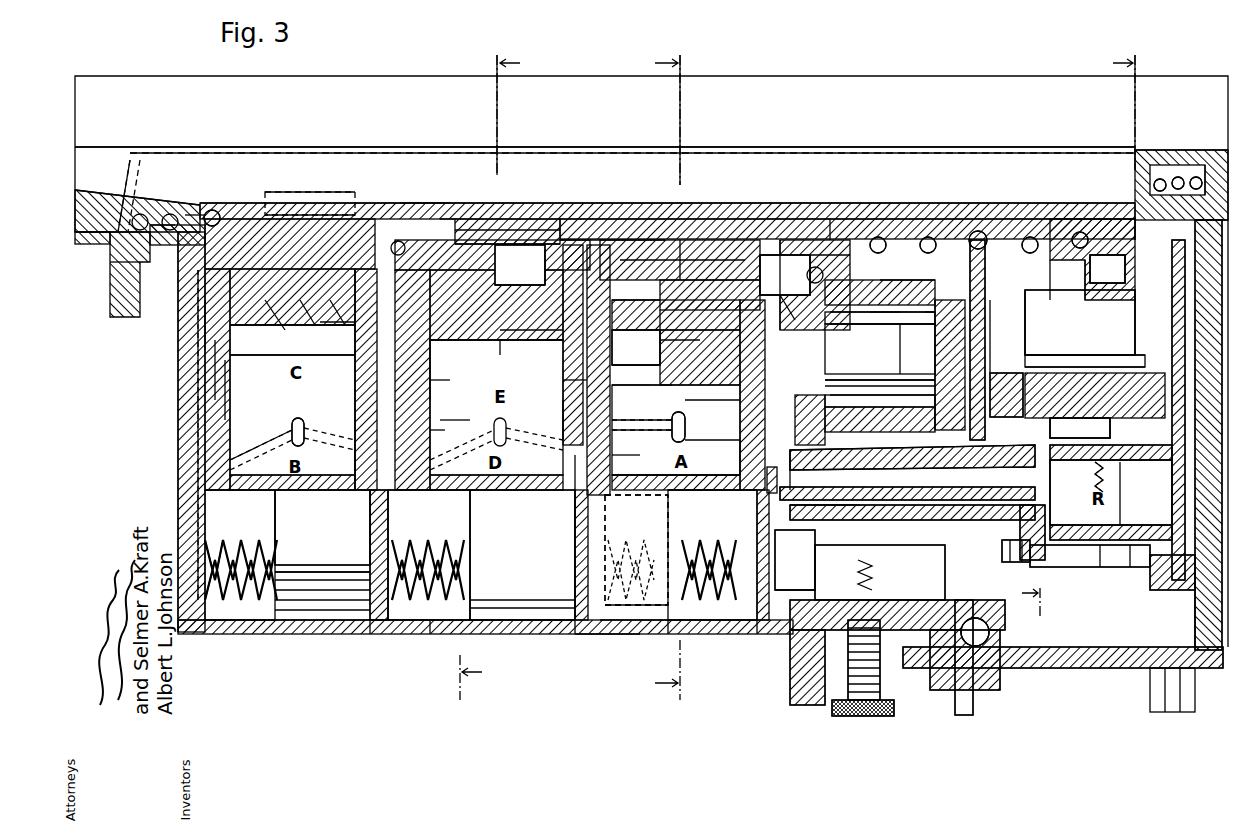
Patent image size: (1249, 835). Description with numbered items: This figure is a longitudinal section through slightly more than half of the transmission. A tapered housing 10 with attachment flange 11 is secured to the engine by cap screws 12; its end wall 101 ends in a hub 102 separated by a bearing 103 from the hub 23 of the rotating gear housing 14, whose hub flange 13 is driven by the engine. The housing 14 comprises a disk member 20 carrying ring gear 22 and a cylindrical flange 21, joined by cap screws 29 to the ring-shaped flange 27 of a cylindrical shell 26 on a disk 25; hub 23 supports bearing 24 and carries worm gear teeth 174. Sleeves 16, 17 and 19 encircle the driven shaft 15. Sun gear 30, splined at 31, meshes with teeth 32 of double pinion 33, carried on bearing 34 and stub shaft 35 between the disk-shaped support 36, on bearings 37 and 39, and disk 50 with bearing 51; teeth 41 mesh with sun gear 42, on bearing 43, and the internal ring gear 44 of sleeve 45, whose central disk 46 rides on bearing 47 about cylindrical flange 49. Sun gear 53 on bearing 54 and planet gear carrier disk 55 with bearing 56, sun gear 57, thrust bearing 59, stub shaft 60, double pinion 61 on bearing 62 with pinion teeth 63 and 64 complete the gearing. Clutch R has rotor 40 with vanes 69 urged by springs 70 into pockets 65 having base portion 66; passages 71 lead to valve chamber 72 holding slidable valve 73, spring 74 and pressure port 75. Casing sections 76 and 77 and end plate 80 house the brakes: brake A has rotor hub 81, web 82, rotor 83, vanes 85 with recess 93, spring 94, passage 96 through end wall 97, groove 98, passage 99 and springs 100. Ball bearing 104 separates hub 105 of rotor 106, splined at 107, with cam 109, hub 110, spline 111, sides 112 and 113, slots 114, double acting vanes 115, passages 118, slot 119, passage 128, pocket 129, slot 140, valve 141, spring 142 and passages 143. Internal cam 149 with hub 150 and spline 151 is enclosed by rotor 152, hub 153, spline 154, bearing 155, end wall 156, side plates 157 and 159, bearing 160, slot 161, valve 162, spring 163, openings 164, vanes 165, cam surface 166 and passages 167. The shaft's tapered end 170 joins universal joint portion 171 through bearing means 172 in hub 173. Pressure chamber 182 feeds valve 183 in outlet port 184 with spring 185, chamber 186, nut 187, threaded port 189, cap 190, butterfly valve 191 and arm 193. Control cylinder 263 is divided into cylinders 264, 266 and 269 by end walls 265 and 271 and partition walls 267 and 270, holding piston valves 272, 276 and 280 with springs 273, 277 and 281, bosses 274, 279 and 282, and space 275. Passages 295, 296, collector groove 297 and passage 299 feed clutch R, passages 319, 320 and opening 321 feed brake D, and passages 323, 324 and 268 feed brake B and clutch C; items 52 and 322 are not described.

The tapered housing 10 is at (1080, 668).
The attachment flange 11 is at (1190, 720).
The cap screws 12 is at (1152, 690).
The hub flange 13 is at (1215, 165).
The gear housing 14 is at (1100, 567).
The driven shaft 15 is at (1015, 153).
The sleeve 16 is at (988, 205).
The sleeve 17 is at (840, 225).
The sleeve 19 is at (793, 240).
The disk member 20 is at (1200, 535).
The cylindrical flange 21 is at (1070, 567).
The ring gear 22 is at (1160, 612).
The hub 23 is at (785, 273).
The bearing 24 is at (820, 253).
The disk 25 is at (808, 460).
The cylindrical shell 26 is at (897, 508).
The ring-shaped flange 27 is at (1030, 518).
The cap screws 29 is at (1002, 552).
The sun gear 30 is at (1088, 258).
The spline 31 is at (1130, 210).
The gear teeth 32 is at (1125, 355).
The double pinion 33 is at (1060, 355).
The bearing 34 is at (1085, 348).
The stub shaft 35 is at (1080, 322).
The disk-shaped support 36 is at (1160, 386).
The bearing 37 is at (1185, 235).
The bearing 39 is at (1107, 269).
The rotor 40 is at (1155, 460).
The teeth 41 is at (1030, 300).
The sun gear 42 is at (1050, 258).
The bearing 43 is at (1078, 232).
The internal ring gear 44 is at (1030, 460).
The rotatable sleeve 45 is at (985, 460).
The central disk 46 is at (972, 352).
The bearing 47 is at (1008, 373).
The cylindrical flange 49 is at (990, 300).
The disk 50 is at (1010, 405).
The bearing 51 is at (1028, 237).
The plate 52 is at (848, 500).
The sun gear 53 is at (928, 237).
The bearing 54 is at (945, 300).
The planet gear carrier disk 55 is at (920, 310).
The bearing 56 is at (977, 231).
The sun gear 57 is at (878, 237).
The thrust bearing 59 is at (890, 278).
The stub shaft 60 is at (880, 375).
The double pinion 61 is at (862, 326).
The bearing 62 is at (896, 349).
The pinion teeth 63 is at (895, 300).
The pinion teeth 64 is at (855, 312).
The pockets 65 is at (1130, 567).
The base portion 66 is at (1120, 480).
The vanes 69 is at (1111, 492).
The springs 70 is at (1090, 488).
The passage 71 is at (1188, 292).
The valve chamber 72 is at (1176, 177).
The slidable valve 73 is at (1195, 177).
The spring 74 is at (1158, 179).
The pressure port 75 is at (1207, 163).
The casing section 76 is at (648, 634).
The casing section 77 is at (425, 636).
The end plate 80 is at (185, 455).
The rotor hub 81 is at (692, 255).
The ring-like web 82 is at (660, 332).
The rotor 83 is at (636, 355).
The vanes 85 is at (712, 442).
The recess 93 is at (685, 425).
The spring 94 is at (657, 401).
The hydraulic pressure passage 96 is at (612, 460).
The end wall 97 is at (612, 400).
The ring-shaped groove 98 is at (642, 435).
The transverse passage 99 is at (642, 435).
The springs 100 is at (665, 358).
The end wall 101 is at (745, 462).
The hub 102 is at (712, 401).
The bearing 103 is at (648, 320).
The ball bearing 104 is at (636, 301).
The hub 105 is at (640, 258).
The rotor 106 is at (470, 395).
The spline connection 107 is at (590, 240).
The cam 109 is at (496, 357).
The hub 110 is at (545, 225).
The spline connection 111 is at (510, 226).
The side 112 is at (437, 370).
The side 113 is at (563, 382).
The slots 114 is at (560, 418).
The double acting vanes 115 is at (458, 416).
The transverse passages 118 is at (292, 432).
The slot 119 is at (288, 445).
The passage 128 is at (446, 431).
The pocket 129 is at (470, 510).
The ring-shaped slot 140 is at (505, 300).
The valve 141 is at (519, 265).
The spring 142 is at (542, 265).
The passages 143 is at (503, 361).
The internal cam 149 is at (230, 340).
The hub 150 is at (290, 205).
The spline connection 151 is at (328, 210).
The rotor 152 is at (215, 395).
The hub 153 is at (450, 218).
The spline connection 154 is at (423, 203).
The bearing 155 is at (397, 241).
The end wall 156 is at (405, 492).
The side plate 157 is at (365, 406).
The side plate 159 is at (220, 420).
The bearing 160 is at (214, 210).
The ring-shaped slot 161 is at (312, 305).
The slidable valve 162 is at (275, 300).
The spring 163 is at (335, 300).
The openings 164 is at (300, 330).
The vanes 165 is at (292, 382).
The internal cam surface 166 is at (322, 492).
The passages 167 is at (232, 490).
The tapered end 170 is at (92, 188).
The universal joint portion 171 is at (157, 223).
The bearing means 172 is at (190, 213).
The hub 173 is at (130, 280).
The worm gear teeth 174 is at (795, 315).
The pressure chamber 182 is at (795, 560).
The valve 183 is at (885, 565).
The outlet port 184 is at (795, 581).
The spring 185 is at (905, 690).
The chamber 186 is at (955, 632).
The pressure adjustment nut 187 is at (878, 716).
The threaded port 189 is at (792, 670).
The cap 190 is at (820, 695).
The butterfly valve 191 is at (989, 633).
The arm 193 is at (1020, 695).
The cylinder 263 is at (408, 634).
The first cylinder 264 is at (690, 634).
The end wall 265 is at (745, 634).
The second cylinder 266 is at (530, 640).
The partition wall 267 is at (575, 634).
The passage 268 is at (198, 436).
The cylinder 269 is at (285, 634).
The partition wall 270 is at (380, 634).
The end wall 271 is at (205, 598).
The piston valve 272 is at (615, 634).
The spring 273 is at (702, 584).
The boss 274 is at (636, 550).
The space 275 is at (615, 490).
The piston valve 276 is at (498, 634).
The spring 277 is at (416, 583).
The boss 279 is at (575, 548).
The piston valve 280 is at (322, 583).
The spring 281 is at (245, 545).
The boss 282 is at (370, 556).
The passage 295 is at (622, 153).
The passage 296 is at (135, 160).
The collector groove 297 is at (105, 244).
The passage 299 is at (178, 334).
The passage 319 is at (575, 465).
The passage 320 is at (531, 321).
The radially extending opening 321 is at (538, 357).
The plate 322 is at (716, 490).
The passage 323 is at (360, 462).
The passage 324 is at (337, 319).